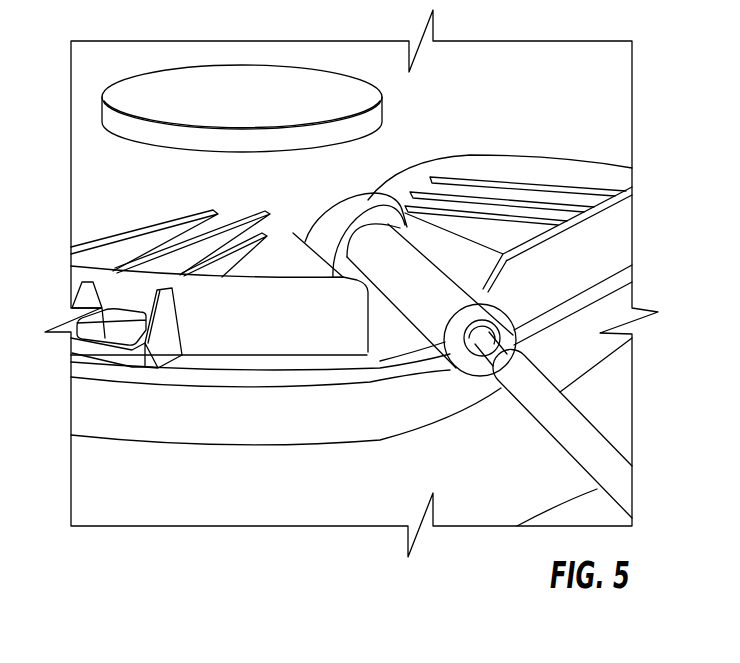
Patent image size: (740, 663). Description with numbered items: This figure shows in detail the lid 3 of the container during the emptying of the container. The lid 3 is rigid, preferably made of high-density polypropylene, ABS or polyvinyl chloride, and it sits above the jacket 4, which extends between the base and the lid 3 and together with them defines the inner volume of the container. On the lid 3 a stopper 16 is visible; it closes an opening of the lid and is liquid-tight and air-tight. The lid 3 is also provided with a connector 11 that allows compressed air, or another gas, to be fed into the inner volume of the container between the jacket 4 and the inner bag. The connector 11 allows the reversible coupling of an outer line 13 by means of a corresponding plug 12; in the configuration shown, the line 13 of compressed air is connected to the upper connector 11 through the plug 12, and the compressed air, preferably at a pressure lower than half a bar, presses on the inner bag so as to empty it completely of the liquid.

The lid 3 is at (92, 194).
The jacket 4 is at (112, 497).
The connector 11 is at (480, 152).
The plug 12 is at (458, 298).
The line 13 is at (606, 445).
The stopper 16 is at (210, 85).